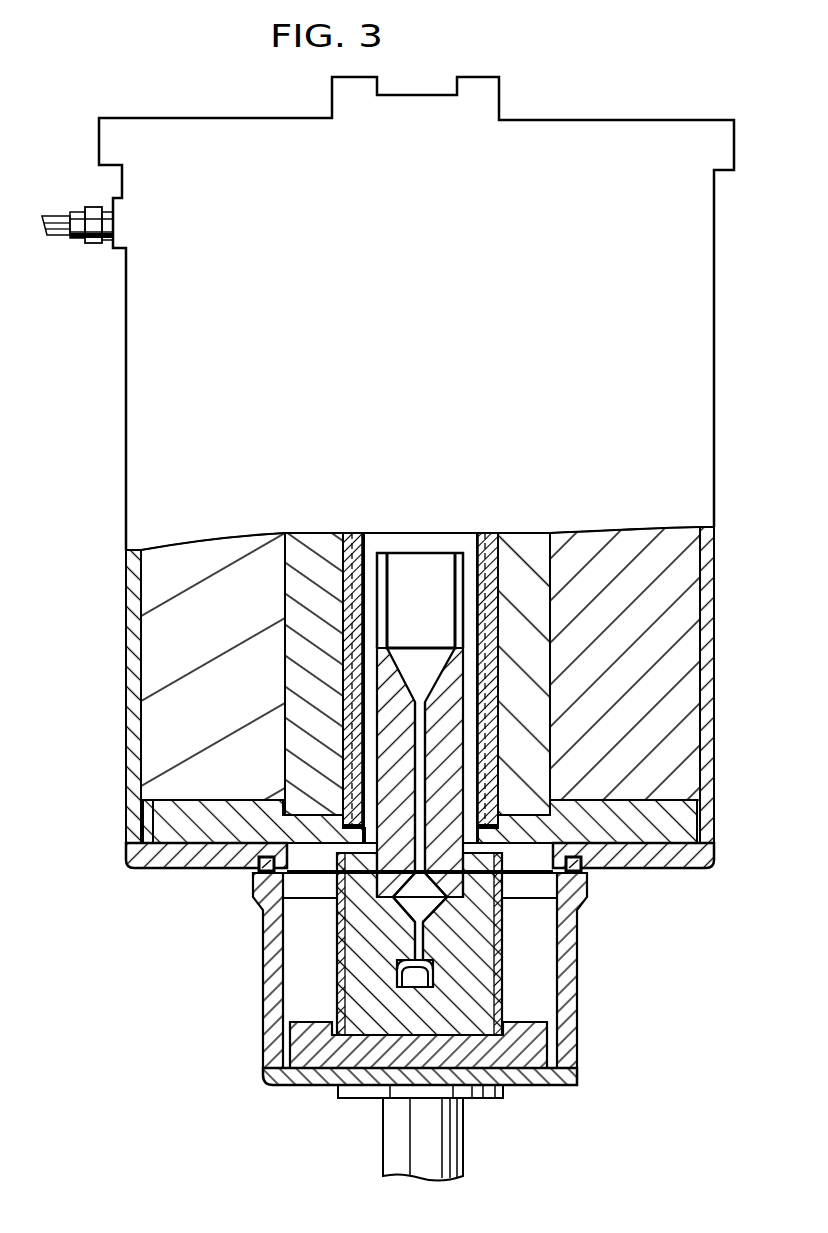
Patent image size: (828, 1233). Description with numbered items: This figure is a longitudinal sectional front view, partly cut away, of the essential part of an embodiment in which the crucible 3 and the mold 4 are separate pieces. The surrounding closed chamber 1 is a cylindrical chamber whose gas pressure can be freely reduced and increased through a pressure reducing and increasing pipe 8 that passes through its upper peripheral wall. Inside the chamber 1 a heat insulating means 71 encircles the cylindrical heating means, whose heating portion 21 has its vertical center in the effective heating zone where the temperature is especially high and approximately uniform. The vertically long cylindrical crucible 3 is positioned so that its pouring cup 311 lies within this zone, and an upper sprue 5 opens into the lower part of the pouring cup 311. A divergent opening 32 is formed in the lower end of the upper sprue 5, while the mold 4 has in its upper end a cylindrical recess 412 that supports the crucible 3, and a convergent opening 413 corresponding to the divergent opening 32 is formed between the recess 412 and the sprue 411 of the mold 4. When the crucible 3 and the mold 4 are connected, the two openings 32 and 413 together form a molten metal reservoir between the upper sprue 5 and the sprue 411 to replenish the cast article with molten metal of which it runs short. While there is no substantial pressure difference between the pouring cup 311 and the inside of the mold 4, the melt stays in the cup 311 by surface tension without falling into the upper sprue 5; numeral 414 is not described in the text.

The closed chamber 1 is at (713, 563).
The pressure reducing and increasing pipe 8 is at (107, 250).
The heat insulating means 71 is at (663, 703).
The heating portion 21 is at (343, 665).
The pouring cup 311 is at (443, 663).
The crucible 3 is at (440, 776).
The upper sprue 5 is at (423, 712).
The divergent opening 32 is at (447, 887).
The convergent opening 413 is at (427, 910).
The valve seat 414 is at (412, 903).
The sprue 411 is at (425, 946).
The cylindrical recess 412 is at (373, 864).
The mold 4 is at (503, 995).